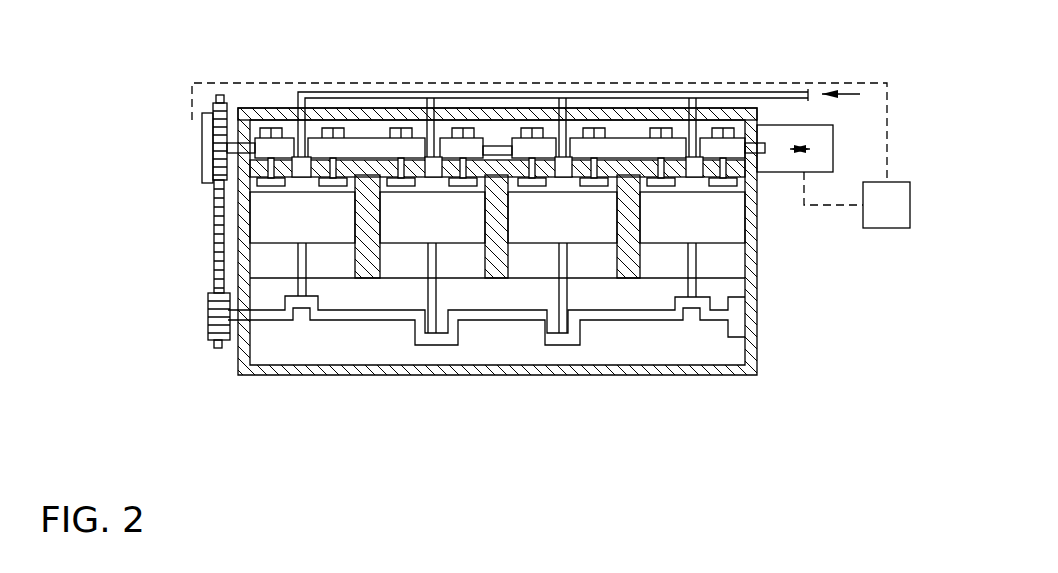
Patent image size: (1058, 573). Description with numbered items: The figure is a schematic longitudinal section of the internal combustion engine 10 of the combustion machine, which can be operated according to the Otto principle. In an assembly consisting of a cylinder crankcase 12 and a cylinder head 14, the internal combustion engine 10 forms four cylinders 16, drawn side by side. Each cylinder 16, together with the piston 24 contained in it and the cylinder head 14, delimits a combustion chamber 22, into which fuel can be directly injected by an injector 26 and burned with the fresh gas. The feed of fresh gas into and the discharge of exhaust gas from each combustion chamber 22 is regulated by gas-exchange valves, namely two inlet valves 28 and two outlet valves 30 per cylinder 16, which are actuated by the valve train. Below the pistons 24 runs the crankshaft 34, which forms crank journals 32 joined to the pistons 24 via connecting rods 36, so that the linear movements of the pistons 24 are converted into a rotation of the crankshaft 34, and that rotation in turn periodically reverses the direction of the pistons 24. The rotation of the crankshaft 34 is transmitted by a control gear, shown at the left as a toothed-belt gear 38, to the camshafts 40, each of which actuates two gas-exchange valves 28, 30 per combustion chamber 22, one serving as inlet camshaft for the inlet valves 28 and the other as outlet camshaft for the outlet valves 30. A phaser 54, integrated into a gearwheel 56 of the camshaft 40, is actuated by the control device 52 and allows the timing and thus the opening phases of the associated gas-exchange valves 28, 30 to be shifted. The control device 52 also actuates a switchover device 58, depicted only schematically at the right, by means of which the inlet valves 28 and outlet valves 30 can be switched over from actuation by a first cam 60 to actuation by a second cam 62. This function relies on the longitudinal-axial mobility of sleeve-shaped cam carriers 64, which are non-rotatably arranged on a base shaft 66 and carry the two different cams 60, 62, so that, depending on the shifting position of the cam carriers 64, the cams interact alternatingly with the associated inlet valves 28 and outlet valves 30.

The internal combustion engine 10 is at (185, 79).
The cylinder crankcase 12 is at (243, 362).
The cylinder head 14 is at (258, 114).
The cylinder 16 is at (268, 265).
The combustion chamber 22 is at (418, 178).
The piston 24 is at (335, 228).
The injector 26 is at (297, 167).
The inlet valve 28 is at (484, 289).
The outlet valve 30 is at (322, 184).
The crank journal 32 is at (288, 330).
The crankshaft 34 is at (486, 348).
The connecting rod 36 is at (302, 313).
The toothed-belt gear 38 is at (173, 221).
The camshaft 40 is at (509, 82).
The control device 52 is at (895, 212).
The phaser 54 is at (173, 221).
The gearwheel 56 is at (218, 135).
The switchover device 58 is at (826, 137).
The first cam 60 is at (326, 133).
The second cam 62 is at (509, 74).
The cam carrier 64 is at (509, 76).
The base shaft 66 is at (492, 149).